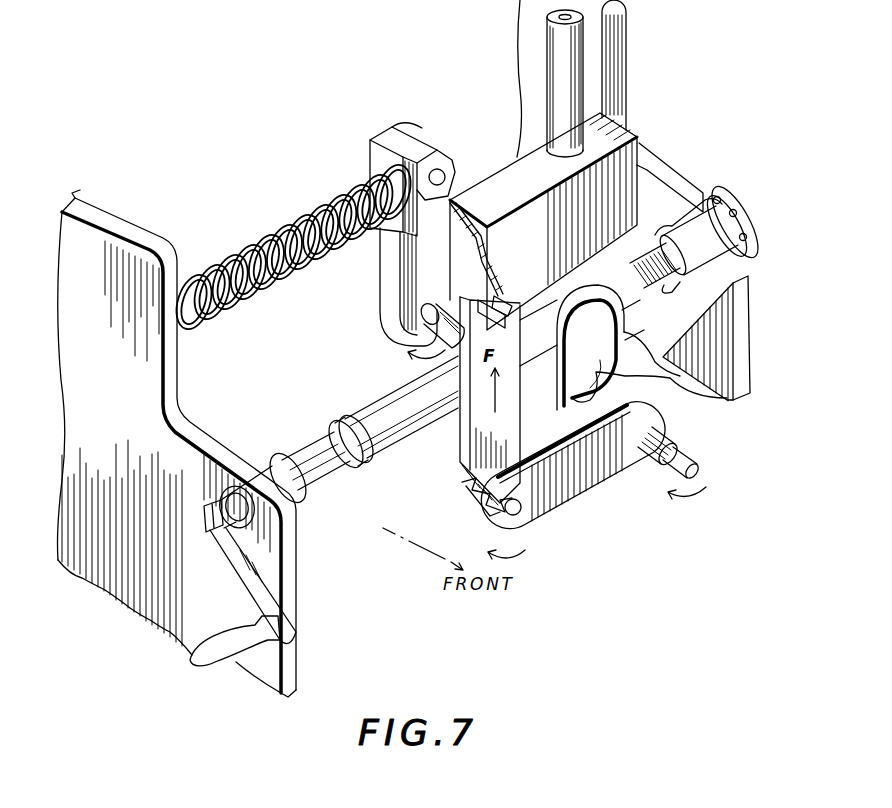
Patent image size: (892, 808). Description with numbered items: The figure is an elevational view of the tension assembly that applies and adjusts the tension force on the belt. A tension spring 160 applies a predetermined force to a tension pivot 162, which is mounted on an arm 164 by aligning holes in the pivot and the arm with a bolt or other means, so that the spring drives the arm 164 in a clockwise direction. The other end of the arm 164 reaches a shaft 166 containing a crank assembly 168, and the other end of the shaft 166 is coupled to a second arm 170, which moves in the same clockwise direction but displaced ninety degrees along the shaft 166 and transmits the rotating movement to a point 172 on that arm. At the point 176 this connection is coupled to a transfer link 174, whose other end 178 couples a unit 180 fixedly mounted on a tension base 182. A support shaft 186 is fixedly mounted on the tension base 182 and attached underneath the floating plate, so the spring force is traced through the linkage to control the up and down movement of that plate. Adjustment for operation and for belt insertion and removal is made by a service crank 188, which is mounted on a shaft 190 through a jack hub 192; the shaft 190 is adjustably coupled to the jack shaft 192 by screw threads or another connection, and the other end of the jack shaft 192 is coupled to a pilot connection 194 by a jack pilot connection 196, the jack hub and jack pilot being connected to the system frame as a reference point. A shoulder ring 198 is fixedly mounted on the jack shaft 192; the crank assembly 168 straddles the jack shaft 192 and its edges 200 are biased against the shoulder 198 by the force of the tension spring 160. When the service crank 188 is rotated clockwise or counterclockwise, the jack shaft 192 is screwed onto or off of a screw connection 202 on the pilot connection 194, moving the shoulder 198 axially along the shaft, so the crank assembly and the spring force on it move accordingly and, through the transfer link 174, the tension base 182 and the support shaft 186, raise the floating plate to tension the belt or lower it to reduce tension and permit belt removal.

The tension spring 160 is at (288, 226).
The tension pivot 162 is at (380, 160).
The arm 164 is at (388, 298).
The shaft 166 is at (680, 430).
The crank assembly 168 is at (537, 457).
The arm 170 is at (577, 496).
The point 172 is at (507, 497).
The transfer link 174 is at (460, 457).
The point 176 is at (473, 487).
The other end 178 is at (470, 293).
The unit 180 is at (495, 293).
The tension base 182 is at (636, 166).
The support shaft 186 is at (556, 65).
The service crank 188 is at (216, 656).
The shaft 190 is at (313, 472).
The jack shaft 192 is at (420, 380).
The pilot connection 194 is at (757, 222).
The jack pilot connection 196 is at (740, 272).
The shoulder ring 198 is at (617, 317).
The edges 200 is at (590, 346).
The screw connection 202 is at (667, 287).